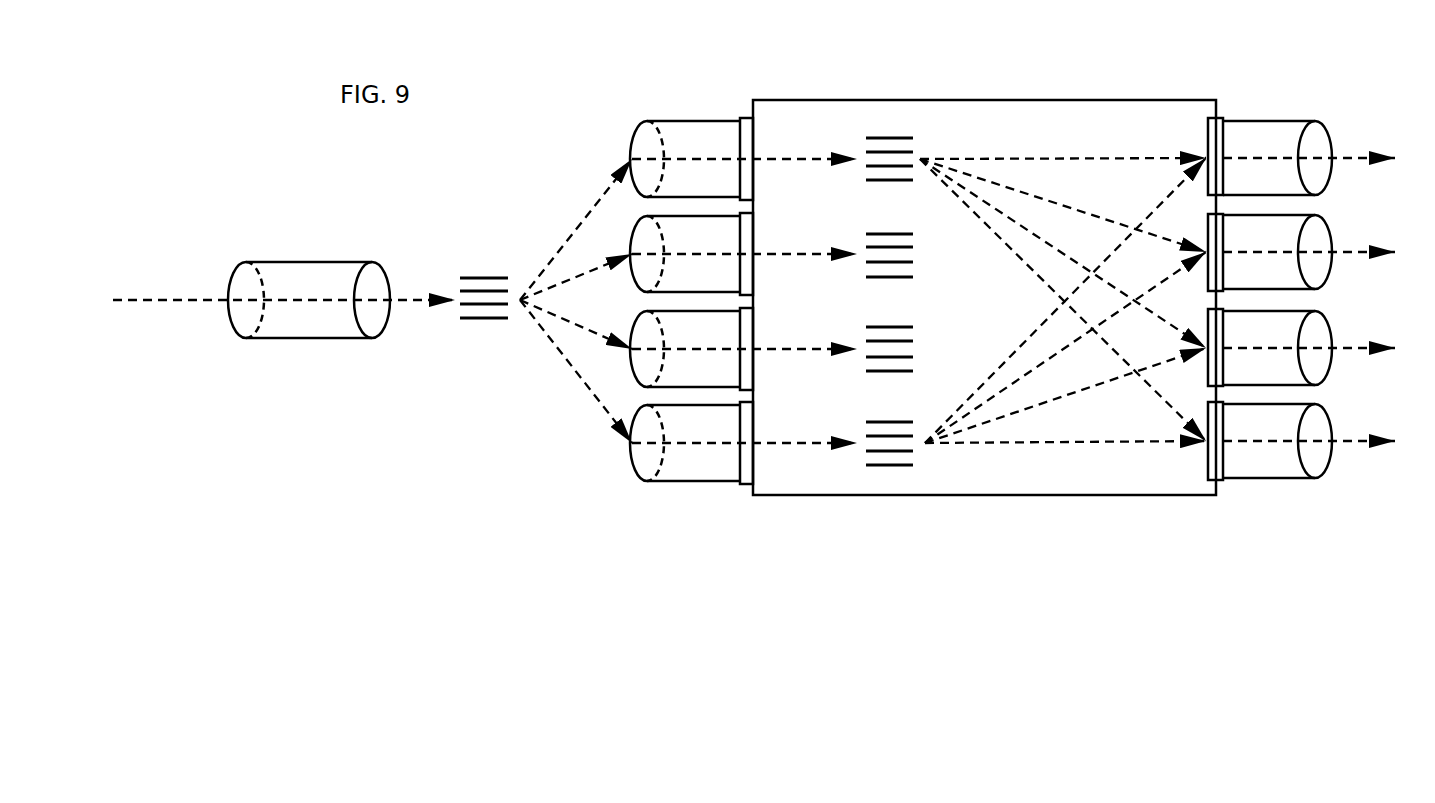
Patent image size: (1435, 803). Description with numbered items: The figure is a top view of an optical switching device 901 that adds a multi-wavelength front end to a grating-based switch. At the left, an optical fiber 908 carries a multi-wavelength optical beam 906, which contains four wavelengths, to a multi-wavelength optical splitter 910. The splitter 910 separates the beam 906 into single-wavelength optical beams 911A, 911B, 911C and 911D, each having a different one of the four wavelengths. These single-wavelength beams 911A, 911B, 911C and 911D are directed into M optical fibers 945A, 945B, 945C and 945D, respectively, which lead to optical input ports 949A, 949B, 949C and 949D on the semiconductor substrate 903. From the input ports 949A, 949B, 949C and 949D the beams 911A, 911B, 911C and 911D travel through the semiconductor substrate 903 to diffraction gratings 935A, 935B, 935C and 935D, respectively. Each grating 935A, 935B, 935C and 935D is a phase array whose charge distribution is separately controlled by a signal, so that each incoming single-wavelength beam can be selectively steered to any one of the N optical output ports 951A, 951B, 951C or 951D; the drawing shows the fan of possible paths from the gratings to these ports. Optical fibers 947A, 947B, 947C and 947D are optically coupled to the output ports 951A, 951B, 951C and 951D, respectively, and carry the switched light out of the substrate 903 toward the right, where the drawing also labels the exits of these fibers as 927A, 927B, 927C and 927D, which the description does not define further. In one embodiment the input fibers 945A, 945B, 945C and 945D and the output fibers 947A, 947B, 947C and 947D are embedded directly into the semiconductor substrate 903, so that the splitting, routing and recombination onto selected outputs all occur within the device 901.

The optical switching device 901 is at (893, 70).
The semiconductor substrate 903 is at (1100, 100).
The multi-wavelength optical beam 906 is at (180, 298).
The optical fiber 908 is at (300, 262).
The multi-wavelength optical splitter 910 is at (480, 278).
The single-wavelength optical beam 911A is at (590, 210).
The single-wavelength optical beam 911B is at (578, 273).
The single-wavelength optical beam 911C is at (572, 325).
The single-wavelength optical beam 911D is at (593, 400).
The optical fiber 945A is at (672, 121).
The optical fiber 945B is at (668, 216).
The optical fiber 945C is at (645, 323).
The optical fiber 945D is at (643, 469).
The optical input port 949A is at (753, 140).
The optical input port 949B is at (753, 237).
The optical input port 949C is at (753, 330).
The optical input port 949D is at (753, 425).
The diffraction grating 935A is at (915, 143).
The diffraction grating 935B is at (912, 252).
The diffraction grating 935C is at (912, 360).
The diffraction grating 935D is at (915, 457).
The optical output port 951A is at (1208, 135).
The optical output port 951B is at (1208, 227).
The optical output port 951C is at (1208, 368).
The optical output port 951D is at (1208, 462).
The optical fiber 947A is at (1318, 130).
The optical fiber 947B is at (1318, 225).
The optical fiber 947C is at (1318, 322).
The optical fiber 947D is at (1318, 418).
The output beam 927A is at (1338, 160).
The output beam 927B is at (1338, 254).
The output beam 927C is at (1338, 349).
The output beam 927D is at (1338, 442).